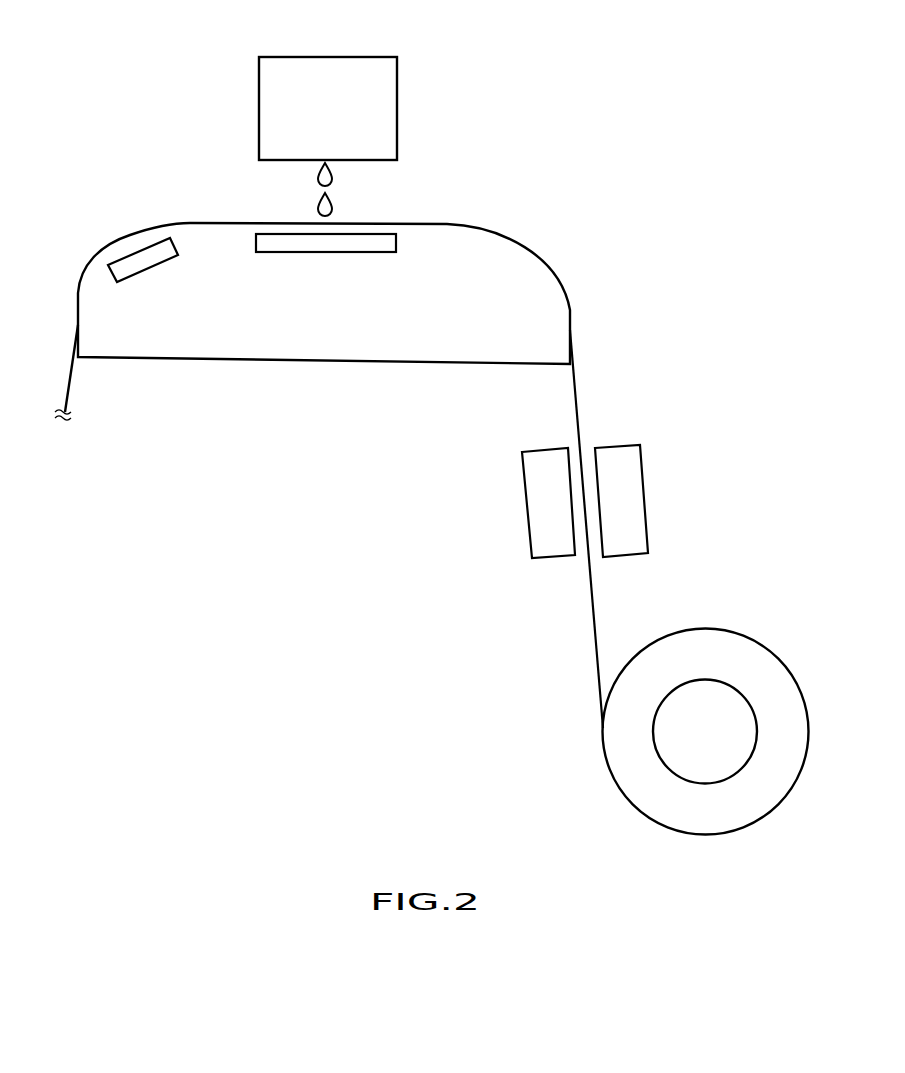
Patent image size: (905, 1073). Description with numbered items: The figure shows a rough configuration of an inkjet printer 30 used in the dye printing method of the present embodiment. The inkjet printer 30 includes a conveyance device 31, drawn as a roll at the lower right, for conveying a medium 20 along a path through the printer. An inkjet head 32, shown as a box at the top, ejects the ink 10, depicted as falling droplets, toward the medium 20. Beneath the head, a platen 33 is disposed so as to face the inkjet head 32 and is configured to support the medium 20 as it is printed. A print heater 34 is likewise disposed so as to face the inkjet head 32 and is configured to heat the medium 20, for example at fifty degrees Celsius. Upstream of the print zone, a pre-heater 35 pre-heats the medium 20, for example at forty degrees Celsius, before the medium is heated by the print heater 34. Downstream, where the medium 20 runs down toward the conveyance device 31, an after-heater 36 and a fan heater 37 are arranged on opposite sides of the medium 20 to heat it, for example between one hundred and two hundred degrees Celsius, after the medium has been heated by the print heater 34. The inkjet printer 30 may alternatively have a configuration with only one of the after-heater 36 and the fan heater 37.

The inkjet printer 30 is at (507, 96).
The inkjet head 32 is at (368, 100).
The ink 10 is at (330, 180).
The platen 33 is at (435, 333).
The pre-heater 35 is at (132, 265).
The print heater 34 is at (325, 243).
The medium 20 is at (580, 415).
The after-heater 36 is at (552, 522).
The fan heater 37 is at (630, 510).
The conveyance device 31 is at (740, 663).